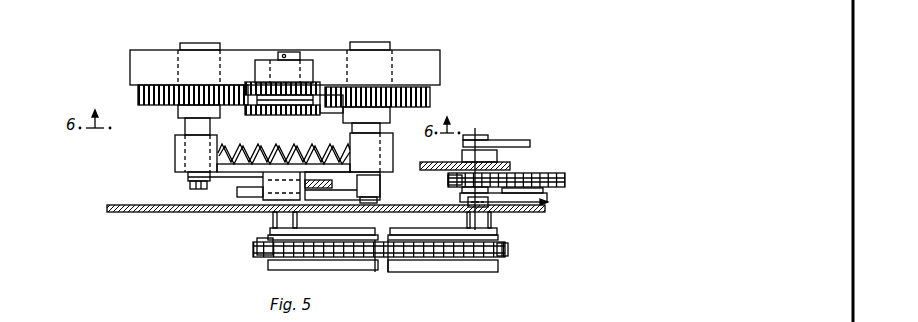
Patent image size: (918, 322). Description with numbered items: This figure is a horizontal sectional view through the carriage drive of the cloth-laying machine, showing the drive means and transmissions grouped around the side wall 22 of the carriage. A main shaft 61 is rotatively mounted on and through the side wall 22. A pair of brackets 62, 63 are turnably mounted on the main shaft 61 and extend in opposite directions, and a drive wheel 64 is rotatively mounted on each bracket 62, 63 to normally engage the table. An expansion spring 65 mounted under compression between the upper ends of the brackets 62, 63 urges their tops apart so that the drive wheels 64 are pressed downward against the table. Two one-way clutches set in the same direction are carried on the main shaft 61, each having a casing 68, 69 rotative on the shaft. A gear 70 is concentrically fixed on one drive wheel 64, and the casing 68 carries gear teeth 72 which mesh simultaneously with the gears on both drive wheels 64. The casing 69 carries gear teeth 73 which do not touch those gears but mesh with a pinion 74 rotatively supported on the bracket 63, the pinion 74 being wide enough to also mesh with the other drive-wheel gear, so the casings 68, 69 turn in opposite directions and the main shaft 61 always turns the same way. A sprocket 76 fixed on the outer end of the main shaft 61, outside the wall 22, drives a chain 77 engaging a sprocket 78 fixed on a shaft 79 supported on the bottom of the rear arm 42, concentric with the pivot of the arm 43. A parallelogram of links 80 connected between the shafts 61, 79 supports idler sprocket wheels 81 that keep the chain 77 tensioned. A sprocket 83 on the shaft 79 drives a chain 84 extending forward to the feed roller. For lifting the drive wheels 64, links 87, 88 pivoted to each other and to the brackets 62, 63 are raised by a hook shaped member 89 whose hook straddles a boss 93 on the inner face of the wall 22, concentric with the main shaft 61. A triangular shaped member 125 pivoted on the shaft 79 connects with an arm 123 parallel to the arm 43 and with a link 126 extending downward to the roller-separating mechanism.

The side wall 22 is at (170, 212).
The rear arm 42 is at (510, 165).
The arm 43 is at (503, 143).
The main shaft 61 is at (280, 221).
The bracket 62 is at (176, 148).
The bracket 63 is at (389, 150).
The drive wheel 64 is at (142, 57).
The expansion spring 65 is at (350, 149).
The casing 68 is at (258, 68).
The casing 69 is at (297, 111).
The gear 70 is at (140, 93).
The gear teeth 72 is at (248, 84).
The gear teeth 73 is at (247, 108).
The pinion 74 is at (342, 93).
The sprocket 76 is at (257, 256).
The chain 77 is at (347, 250).
The sprocket 78 is at (508, 251).
The shaft 79 is at (482, 135).
The parallelogram of links 80 is at (425, 229).
The idler sprocket wheel 81 is at (388, 262).
The sprocket 83 is at (460, 183).
The chain 84 is at (563, 175).
The link 87 is at (190, 181).
The link 88 is at (379, 190).
The hook shaped member 89 is at (318, 188).
The boss 93 is at (264, 195).
The arm 123 is at (546, 203).
The triangular shaped member 125 is at (548, 198).
The link 126 is at (544, 191).